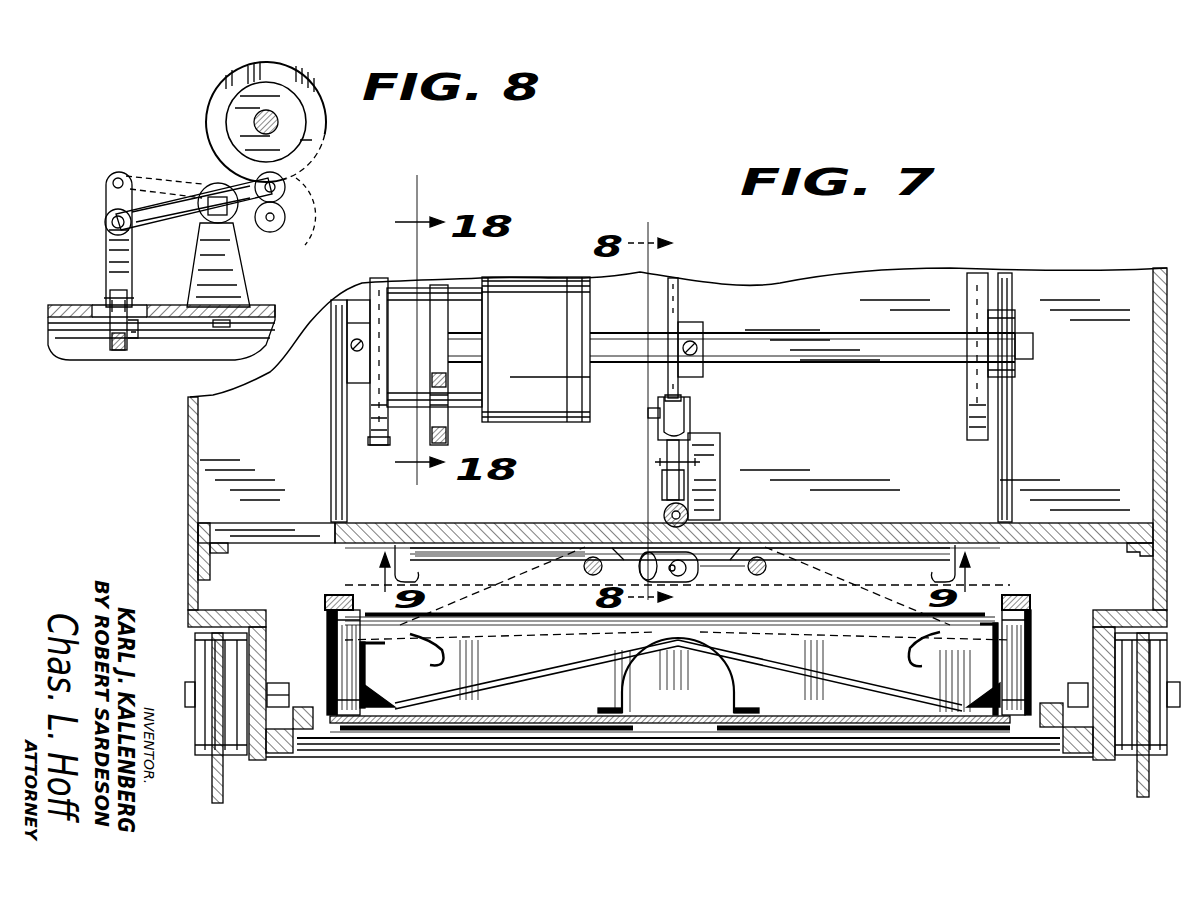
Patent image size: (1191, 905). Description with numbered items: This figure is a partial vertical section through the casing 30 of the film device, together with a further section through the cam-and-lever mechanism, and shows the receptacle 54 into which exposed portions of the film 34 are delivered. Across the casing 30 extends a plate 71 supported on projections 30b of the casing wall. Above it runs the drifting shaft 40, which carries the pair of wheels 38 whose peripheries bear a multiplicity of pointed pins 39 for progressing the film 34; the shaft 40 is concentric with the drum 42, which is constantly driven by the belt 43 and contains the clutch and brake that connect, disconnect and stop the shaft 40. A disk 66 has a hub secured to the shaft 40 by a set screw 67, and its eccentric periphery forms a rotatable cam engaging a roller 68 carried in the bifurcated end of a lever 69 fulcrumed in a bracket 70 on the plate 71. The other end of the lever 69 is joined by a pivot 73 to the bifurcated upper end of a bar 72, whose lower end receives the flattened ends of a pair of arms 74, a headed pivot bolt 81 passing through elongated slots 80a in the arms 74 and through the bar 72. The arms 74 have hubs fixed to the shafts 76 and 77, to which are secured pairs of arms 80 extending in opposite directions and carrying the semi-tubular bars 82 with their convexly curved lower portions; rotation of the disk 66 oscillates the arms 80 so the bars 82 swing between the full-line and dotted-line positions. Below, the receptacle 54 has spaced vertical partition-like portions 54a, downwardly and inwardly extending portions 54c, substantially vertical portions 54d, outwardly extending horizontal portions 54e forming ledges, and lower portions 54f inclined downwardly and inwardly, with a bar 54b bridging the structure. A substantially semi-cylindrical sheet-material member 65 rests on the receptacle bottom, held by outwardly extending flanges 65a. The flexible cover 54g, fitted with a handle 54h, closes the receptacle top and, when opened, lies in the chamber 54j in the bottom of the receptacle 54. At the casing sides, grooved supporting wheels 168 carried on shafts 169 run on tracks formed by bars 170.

In FIG. 7, the casing 30 is at (1152, 420).
In FIG. 7, the projections 30b is at (1142, 557).
In FIG. 7, the film 34 is at (470, 688).
In FIG. 7, the wheels 38 is at (378, 280).
In FIG. 7, the pointed pins 39 is at (377, 447).
In FIG. 8, the drifting shaft 40 is at (278, 128).
In FIG. 7, the drifting shaft 40 is at (800, 340).
In FIG. 7, the drum 42 is at (498, 295).
In FIG. 7, the belt 43 is at (435, 288).
In FIG. 7, the receptacle 54 is at (345, 592).
In FIG. 7, the vertical partition-like portions 54a is at (332, 660).
In FIG. 7, the carriage cross bar 54b is at (470, 616).
In FIG. 7, the downwardly and inwardly extending portions 54c is at (425, 652).
In FIG. 7, the substantially vertical portions 54d is at (335, 635).
In FIG. 7, the substantially horizontal portions 54e is at (366, 665).
In FIG. 7, the lower portions 54f is at (462, 698).
In FIG. 7, the flexible cover 54g is at (675, 724).
In FIG. 7, the handle 54h is at (325, 602).
In FIG. 7, the chamber 54j is at (520, 740).
In FIG. 7, the member 65 is at (726, 690).
In FIG. 7, the outwardly extending flanges 65a is at (612, 708).
In FIG. 8, the disk 66 is at (300, 92).
In FIG. 7, the disk 66 is at (676, 290).
In FIG. 7, the set screw 67 is at (692, 340).
In FIG. 8, the roller 68 is at (286, 196).
In FIG. 7, the roller 68 is at (662, 398).
In FIG. 8, the lever 69 is at (146, 224).
In FIG. 7, the lever 69 is at (690, 420).
In FIG. 8, the bracket 70 is at (242, 238).
In FIG. 7, the bracket 70 is at (718, 452).
In FIG. 8, the plate 71 is at (258, 308).
In FIG. 7, the plate 71 is at (838, 522).
In FIG. 8, the bar 72 is at (108, 249).
In FIG. 8, the pivot 73 is at (108, 212).
In FIG. 7, the pivot 73 is at (648, 414).
In FIG. 8, the arms 74 is at (110, 345).
In FIG. 7, the arms 74 is at (618, 560).
In FIG. 8, the shaft 76 is at (160, 338).
In FIG. 7, the shaft 76 is at (768, 570).
In FIG. 7, the shaft 77 is at (596, 578).
In FIG. 7, the arms 80 is at (580, 556).
In FIG. 7, the elongated slots 80a is at (757, 578).
In FIG. 8, the headed pivot bolt 81 is at (132, 355).
In FIG. 7, the headed pivot bolt 81 is at (680, 586).
In FIG. 7, the bars 82 is at (540, 292).
In FIG. 7, the supporting wheels 168 is at (225, 755).
In FIG. 7, the shafts 169 is at (292, 694).
In FIG. 7, the bars 170 is at (224, 790).